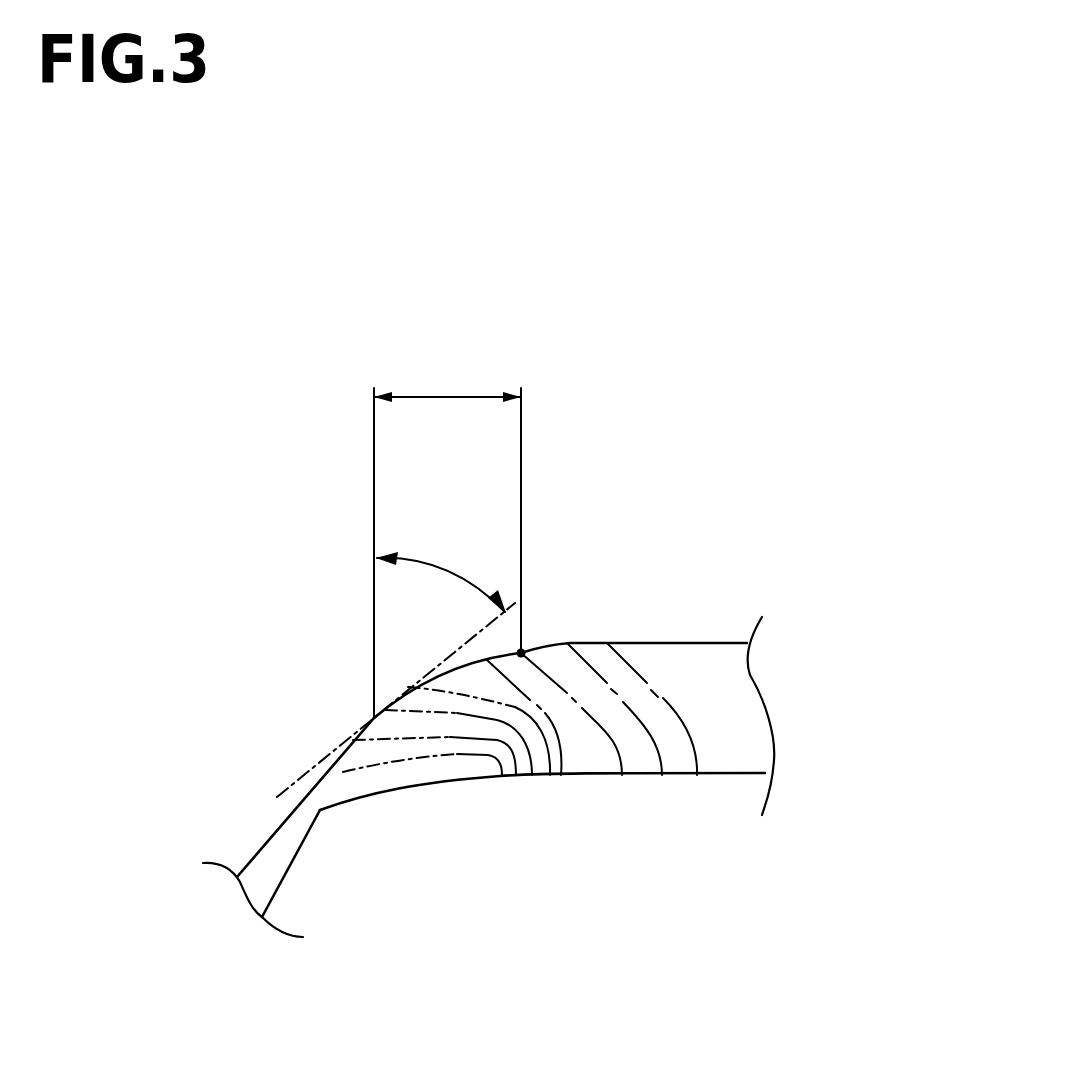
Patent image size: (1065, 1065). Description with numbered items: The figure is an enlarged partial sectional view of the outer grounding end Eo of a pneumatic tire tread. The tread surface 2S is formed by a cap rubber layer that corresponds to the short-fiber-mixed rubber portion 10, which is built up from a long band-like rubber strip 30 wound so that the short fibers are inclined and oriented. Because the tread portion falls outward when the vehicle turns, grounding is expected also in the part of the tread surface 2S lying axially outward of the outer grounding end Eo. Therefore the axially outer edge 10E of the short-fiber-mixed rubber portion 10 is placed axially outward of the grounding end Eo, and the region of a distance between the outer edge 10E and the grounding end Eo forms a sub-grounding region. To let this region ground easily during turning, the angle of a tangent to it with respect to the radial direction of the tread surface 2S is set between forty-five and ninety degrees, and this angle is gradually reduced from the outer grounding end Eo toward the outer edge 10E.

The short-fiber-mixed rubber portion 10 is at (737, 713).
The axially outer edge of short-fiber-mixed rubber portion 10E is at (374, 718).
The outer grounding end Eo is at (521, 653).
The tread surface 2S is at (715, 643).
The rubber strip 30 is at (608, 747).